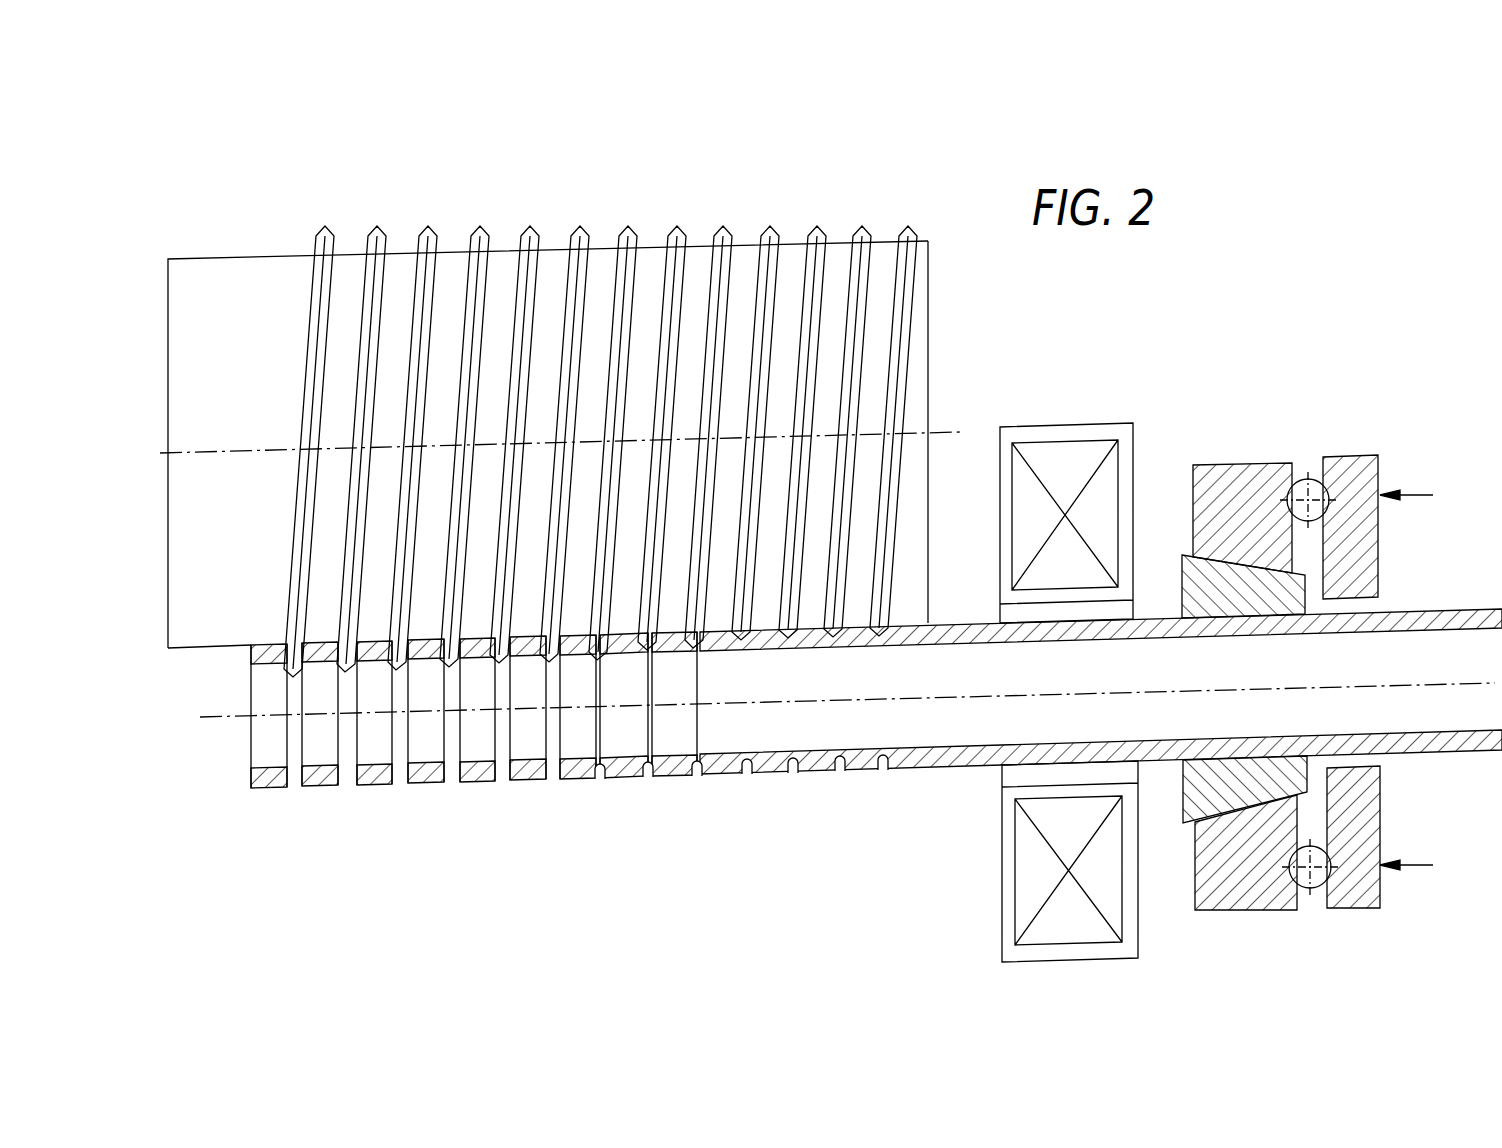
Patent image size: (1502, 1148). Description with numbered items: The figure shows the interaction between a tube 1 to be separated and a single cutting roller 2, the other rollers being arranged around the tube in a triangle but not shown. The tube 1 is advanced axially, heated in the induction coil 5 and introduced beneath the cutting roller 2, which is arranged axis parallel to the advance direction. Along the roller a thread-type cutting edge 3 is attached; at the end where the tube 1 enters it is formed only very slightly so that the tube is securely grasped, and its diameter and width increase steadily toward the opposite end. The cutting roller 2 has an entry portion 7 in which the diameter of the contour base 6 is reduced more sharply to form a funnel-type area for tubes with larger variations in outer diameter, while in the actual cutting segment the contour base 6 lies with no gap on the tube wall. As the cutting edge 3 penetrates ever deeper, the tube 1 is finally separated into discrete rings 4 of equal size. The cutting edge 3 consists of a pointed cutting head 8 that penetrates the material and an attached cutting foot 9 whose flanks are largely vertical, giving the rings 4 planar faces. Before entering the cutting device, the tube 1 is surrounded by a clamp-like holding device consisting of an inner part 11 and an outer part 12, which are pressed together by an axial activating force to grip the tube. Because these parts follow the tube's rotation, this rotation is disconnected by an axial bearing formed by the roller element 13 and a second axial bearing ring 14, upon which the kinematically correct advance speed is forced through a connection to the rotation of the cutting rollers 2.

The tube 1 is at (805, 769).
The cutting roller 2 is at (493, 297).
The cutting edge 3 is at (320, 226).
The ring 4 is at (266, 786).
The induction coil 5 is at (1027, 858).
The contour base 6 is at (400, 254).
The entry portion 7 is at (905, 614).
The cutting head 8 is at (357, 667).
The cutting foot 9 is at (361, 666).
The inner part 11 is at (1193, 582).
The outer part 12 is at (1243, 498).
The roller element 13 is at (1300, 496).
The second axial bearing ring 14 is at (1356, 496).